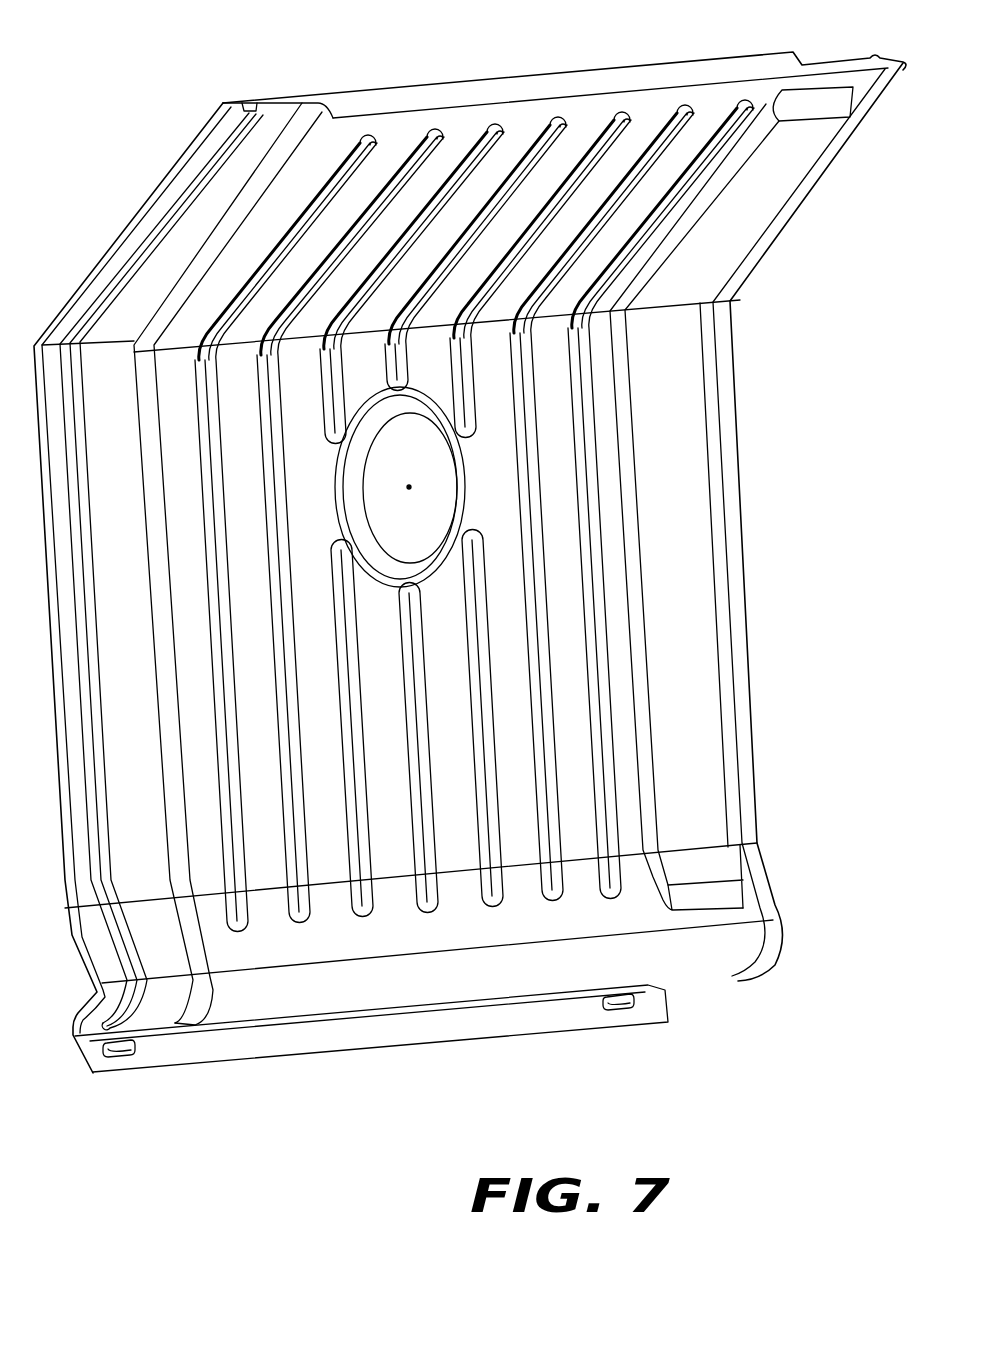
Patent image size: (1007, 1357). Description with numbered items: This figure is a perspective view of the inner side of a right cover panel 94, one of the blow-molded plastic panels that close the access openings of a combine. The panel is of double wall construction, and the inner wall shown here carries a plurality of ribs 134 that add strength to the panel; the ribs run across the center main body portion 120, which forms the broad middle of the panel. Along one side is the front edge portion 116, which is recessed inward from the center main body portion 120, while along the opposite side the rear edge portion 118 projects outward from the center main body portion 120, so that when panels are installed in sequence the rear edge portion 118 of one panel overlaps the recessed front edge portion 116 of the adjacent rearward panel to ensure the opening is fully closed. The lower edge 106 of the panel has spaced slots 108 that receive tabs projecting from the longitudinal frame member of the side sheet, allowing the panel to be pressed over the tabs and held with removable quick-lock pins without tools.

The right cover panel 94 is at (536, 60).
The rear edge portion 118 is at (288, 110).
The center main body portion 120 is at (640, 103).
The front edge portion 116 is at (818, 128).
The ribs 134 is at (247, 923).
The lower edge 106 is at (445, 1030).
The slots 108 is at (125, 1060).